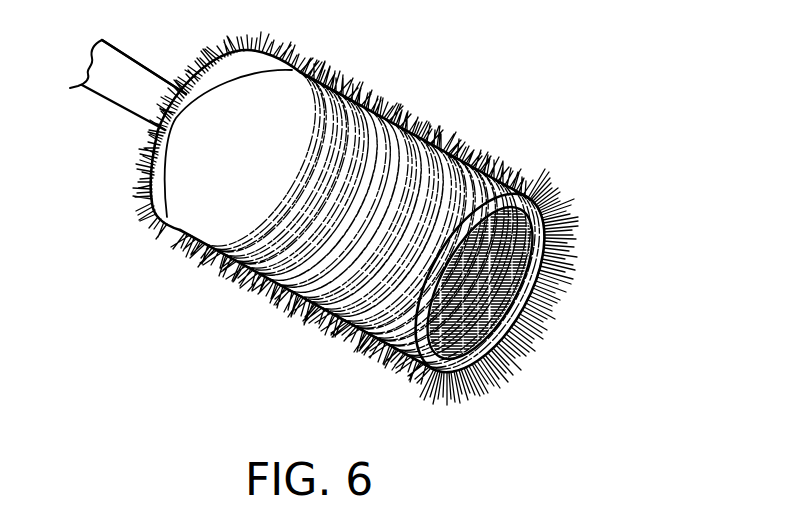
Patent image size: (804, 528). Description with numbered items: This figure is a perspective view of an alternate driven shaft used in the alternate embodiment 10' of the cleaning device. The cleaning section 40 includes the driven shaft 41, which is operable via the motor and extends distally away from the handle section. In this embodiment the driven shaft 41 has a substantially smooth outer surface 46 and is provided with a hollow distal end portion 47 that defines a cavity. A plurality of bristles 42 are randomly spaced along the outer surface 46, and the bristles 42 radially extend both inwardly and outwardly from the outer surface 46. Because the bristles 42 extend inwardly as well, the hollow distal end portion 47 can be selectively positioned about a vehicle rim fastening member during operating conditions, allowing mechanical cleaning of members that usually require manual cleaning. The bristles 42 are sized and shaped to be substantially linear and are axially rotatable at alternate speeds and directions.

The alternate embodiment 10' is at (390, 229).
The cleaning section 40 is at (107, 100).
The driven shaft 41 is at (135, 78).
The bristles 42 is at (358, 82).
The outer surface 46 is at (543, 230).
The hollow distal end portion 47 is at (503, 318).